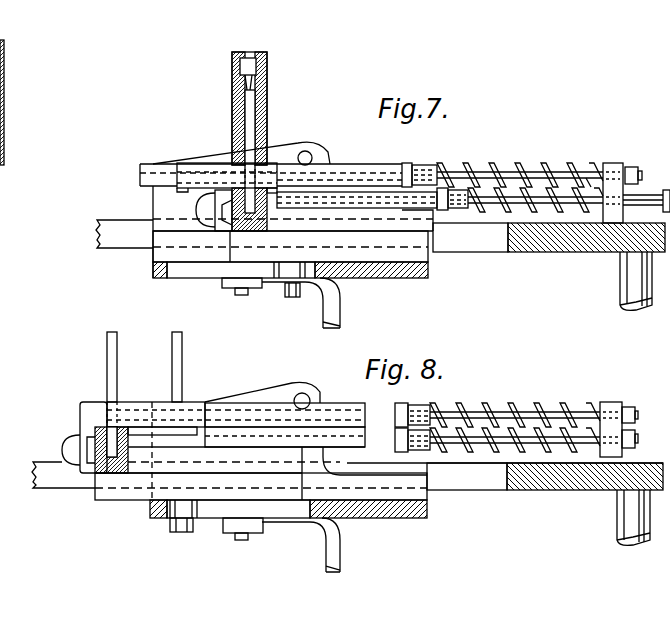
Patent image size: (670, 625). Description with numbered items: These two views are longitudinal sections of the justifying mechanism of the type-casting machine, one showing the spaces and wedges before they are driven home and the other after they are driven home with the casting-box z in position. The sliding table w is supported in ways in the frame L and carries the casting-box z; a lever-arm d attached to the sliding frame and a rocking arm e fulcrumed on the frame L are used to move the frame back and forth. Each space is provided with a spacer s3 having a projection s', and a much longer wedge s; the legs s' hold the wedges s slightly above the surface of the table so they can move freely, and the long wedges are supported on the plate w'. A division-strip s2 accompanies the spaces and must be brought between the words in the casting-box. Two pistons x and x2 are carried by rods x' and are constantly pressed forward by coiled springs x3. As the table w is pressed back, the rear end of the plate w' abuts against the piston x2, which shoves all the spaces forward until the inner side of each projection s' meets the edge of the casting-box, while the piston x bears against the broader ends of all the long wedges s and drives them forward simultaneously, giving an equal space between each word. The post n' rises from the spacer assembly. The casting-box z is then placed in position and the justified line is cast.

In FIG. 7, the casting-box z is at (284, 63).
In FIG. 7, the division-strip s2 is at (267, 123).
In FIG. 8, the division-strip s2 is at (178, 358).
In FIG. 7, the wedge s is at (269, 162).
In FIG. 8, the wedge s is at (285, 406).
In FIG. 7, the projection s' is at (235, 178).
In FIG. 8, the projection s' is at (164, 446).
In FIG. 8, the spacer s3 is at (162, 412).
In FIG. 8, the post n' is at (111, 386).
In FIG. 7, the frame L is at (163, 212).
In FIG. 8, the frame L is at (428, 509).
In FIG. 7, the sliding table w is at (290, 246).
In FIG. 8, the sliding table w is at (261, 486).
In FIG. 7, the plate w' is at (357, 197).
In FIG. 8, the plate w' is at (285, 437).
In FIG. 7, the piston x is at (419, 162).
In FIG. 8, the piston x is at (412, 405).
In FIG. 7, the piston x2 is at (457, 211).
In FIG. 8, the piston x2 is at (408, 448).
In FIG. 7, the rod x' is at (520, 180).
In FIG. 8, the rod x' is at (515, 414).
In FIG. 7, the coiled spring x3 is at (487, 163).
In FIG. 8, the coiled spring x3 is at (482, 410).
In FIG. 7, the lever-arm d is at (288, 297).
In FIG. 8, the lever-arm d is at (176, 533).
In FIG. 7, the rocking arm e is at (308, 303).
In FIG. 8, the rocking arm e is at (338, 549).